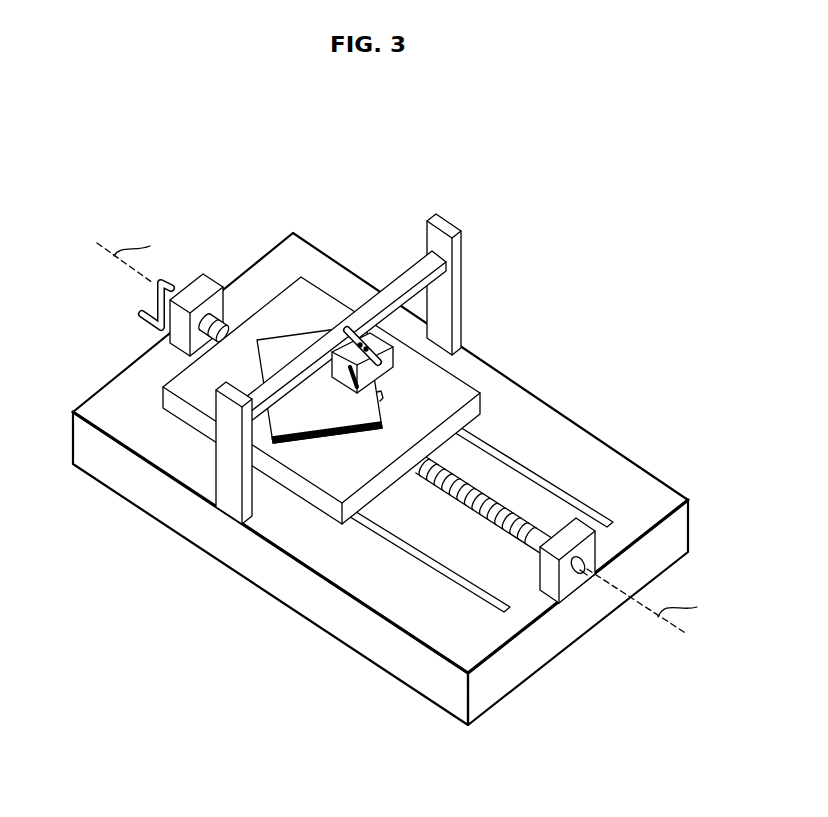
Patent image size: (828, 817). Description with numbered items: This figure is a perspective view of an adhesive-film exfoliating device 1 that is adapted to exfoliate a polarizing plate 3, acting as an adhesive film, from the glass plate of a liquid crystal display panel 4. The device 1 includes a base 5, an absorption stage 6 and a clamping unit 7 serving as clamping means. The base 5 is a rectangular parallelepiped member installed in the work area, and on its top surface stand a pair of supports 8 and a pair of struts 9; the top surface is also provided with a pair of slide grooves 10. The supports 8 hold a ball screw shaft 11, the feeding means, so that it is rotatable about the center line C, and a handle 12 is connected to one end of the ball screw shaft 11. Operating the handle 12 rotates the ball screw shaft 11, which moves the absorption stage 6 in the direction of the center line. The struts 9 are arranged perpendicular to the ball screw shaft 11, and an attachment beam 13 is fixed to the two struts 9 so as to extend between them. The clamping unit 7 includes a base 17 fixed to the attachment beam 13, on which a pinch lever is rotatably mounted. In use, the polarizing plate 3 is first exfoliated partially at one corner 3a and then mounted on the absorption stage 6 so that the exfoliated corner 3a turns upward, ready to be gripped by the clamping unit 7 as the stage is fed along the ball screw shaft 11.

The adhesive-film exfoliating device 1 is at (393, 431).
The polarizing plate 3 is at (322, 470).
The exfoliated corner 3a is at (390, 397).
The liquid crystal display panel 4 is at (321, 423).
The base 5 is at (322, 619).
The absorption stage 6 is at (318, 500).
The clamping unit 7 is at (395, 338).
The supports 8 is at (175, 347).
The struts 9 is at (457, 266).
The slide grooves 10 is at (583, 497).
The ball screw shaft 11 is at (483, 497).
The handle 12 is at (158, 299).
The attachment beam 13 is at (398, 290).
The base of clamping unit 17 is at (385, 338).